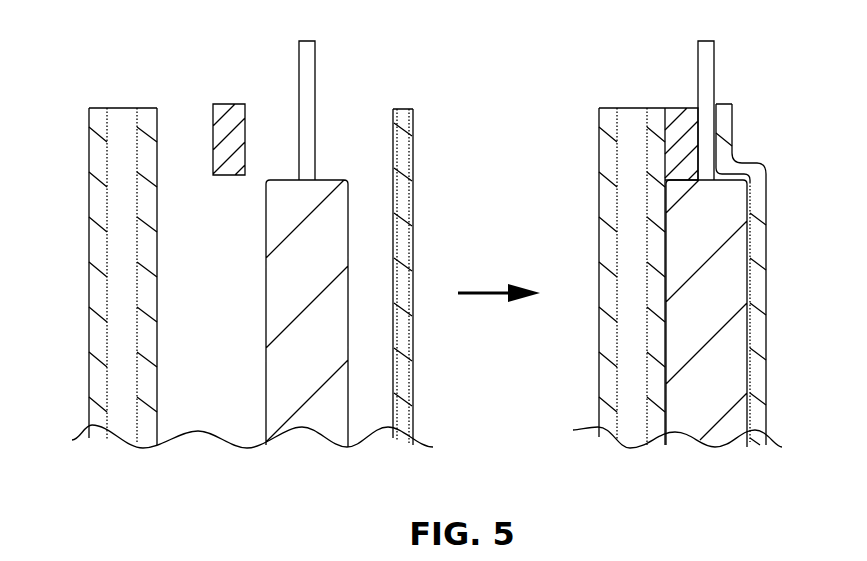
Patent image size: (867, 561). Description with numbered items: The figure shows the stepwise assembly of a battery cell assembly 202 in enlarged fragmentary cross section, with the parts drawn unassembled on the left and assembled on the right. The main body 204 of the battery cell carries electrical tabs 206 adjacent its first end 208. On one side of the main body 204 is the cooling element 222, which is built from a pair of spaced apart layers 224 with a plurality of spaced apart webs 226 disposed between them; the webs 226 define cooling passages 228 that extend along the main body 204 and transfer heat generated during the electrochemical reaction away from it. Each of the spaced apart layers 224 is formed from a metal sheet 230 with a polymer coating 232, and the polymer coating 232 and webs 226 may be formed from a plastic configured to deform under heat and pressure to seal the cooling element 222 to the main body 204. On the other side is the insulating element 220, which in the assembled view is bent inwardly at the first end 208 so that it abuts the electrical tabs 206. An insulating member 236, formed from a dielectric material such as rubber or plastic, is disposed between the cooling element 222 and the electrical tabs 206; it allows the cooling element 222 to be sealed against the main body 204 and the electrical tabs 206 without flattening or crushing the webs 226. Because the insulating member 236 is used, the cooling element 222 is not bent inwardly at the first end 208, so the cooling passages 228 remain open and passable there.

The battery cell assembly 202 is at (614, 247).
The main body 204 is at (290, 275).
The electrical tabs 206 is at (316, 68).
The first end 208 is at (506, 273).
The insulating element 220 is at (426, 189).
The cooling element 222 is at (80, 143).
The spaced apart layers 224 is at (100, 272).
The webs 226 is at (123, 206).
The cooling passages 228 is at (125, 113).
The metal sheet 230 is at (103, 425).
The polymer coating 232 is at (100, 388).
The insulating member 236 is at (226, 103).